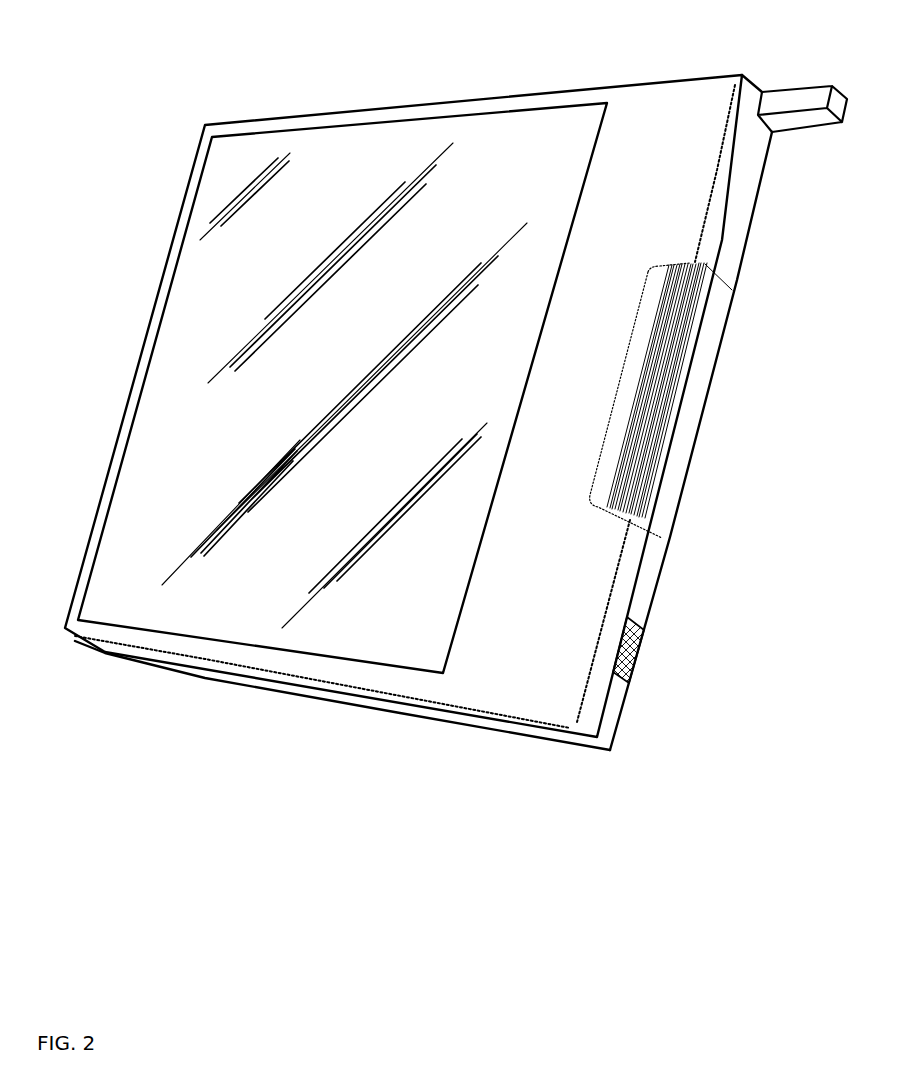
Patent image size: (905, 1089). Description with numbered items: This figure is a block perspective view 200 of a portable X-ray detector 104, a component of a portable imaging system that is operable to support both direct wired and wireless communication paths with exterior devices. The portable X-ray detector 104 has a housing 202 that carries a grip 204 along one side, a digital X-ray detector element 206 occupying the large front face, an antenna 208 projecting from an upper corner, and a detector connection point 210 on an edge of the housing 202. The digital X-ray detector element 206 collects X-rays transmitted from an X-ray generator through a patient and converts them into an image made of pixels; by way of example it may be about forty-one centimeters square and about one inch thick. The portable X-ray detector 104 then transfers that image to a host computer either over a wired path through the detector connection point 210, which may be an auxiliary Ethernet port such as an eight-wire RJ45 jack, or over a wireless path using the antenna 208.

The electronic device 200 is at (724, 995).
The portable X-ray detector 104 is at (610, 753).
The housing 202 is at (665, 95).
The grip 204 is at (693, 373).
The digital X-ray detector element 206 is at (345, 150).
The antenna 208 is at (800, 85).
The detector connection point 210 is at (645, 650).